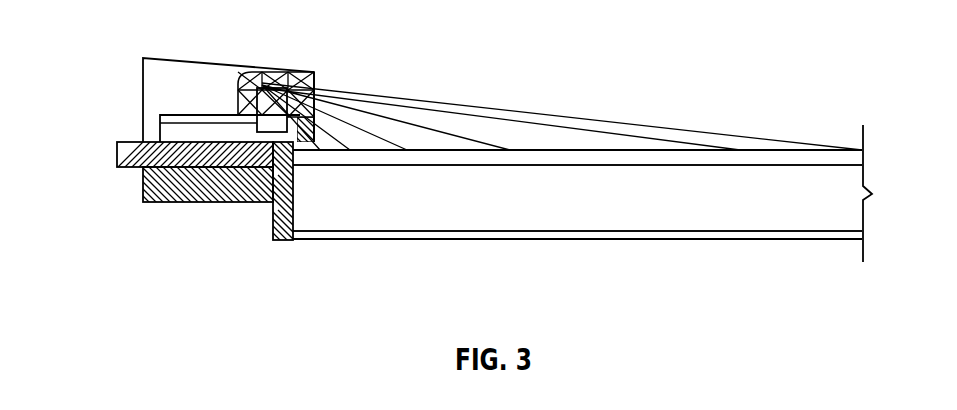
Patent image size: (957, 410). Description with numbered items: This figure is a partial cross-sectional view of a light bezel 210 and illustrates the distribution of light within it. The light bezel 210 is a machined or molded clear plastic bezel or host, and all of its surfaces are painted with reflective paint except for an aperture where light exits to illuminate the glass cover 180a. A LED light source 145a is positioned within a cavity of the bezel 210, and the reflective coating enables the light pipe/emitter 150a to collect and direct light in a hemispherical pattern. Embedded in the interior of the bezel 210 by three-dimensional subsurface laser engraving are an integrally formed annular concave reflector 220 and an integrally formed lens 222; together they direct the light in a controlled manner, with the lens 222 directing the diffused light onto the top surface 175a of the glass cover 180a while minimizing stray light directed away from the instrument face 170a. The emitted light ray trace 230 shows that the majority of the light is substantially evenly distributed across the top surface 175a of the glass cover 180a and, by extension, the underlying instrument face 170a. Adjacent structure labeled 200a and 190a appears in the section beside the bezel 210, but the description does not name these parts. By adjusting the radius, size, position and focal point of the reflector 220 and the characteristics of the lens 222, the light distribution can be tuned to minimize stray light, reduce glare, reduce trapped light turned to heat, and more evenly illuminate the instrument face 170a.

The light bezel 210 is at (141, 80).
The annular concave reflector 220 is at (238, 101).
The lens 222 is at (322, 97).
The LED light source 145a is at (262, 84).
The light pipe/emitter 150a is at (266, 88).
The emitted light ray trace 230 is at (863, 75).
The heat sink plate 200a is at (128, 168).
The heat sink base 190a is at (197, 203).
The glass cover 180a is at (340, 168).
The top surface of the glass cover 175a is at (757, 150).
The instrument face 170a is at (440, 240).